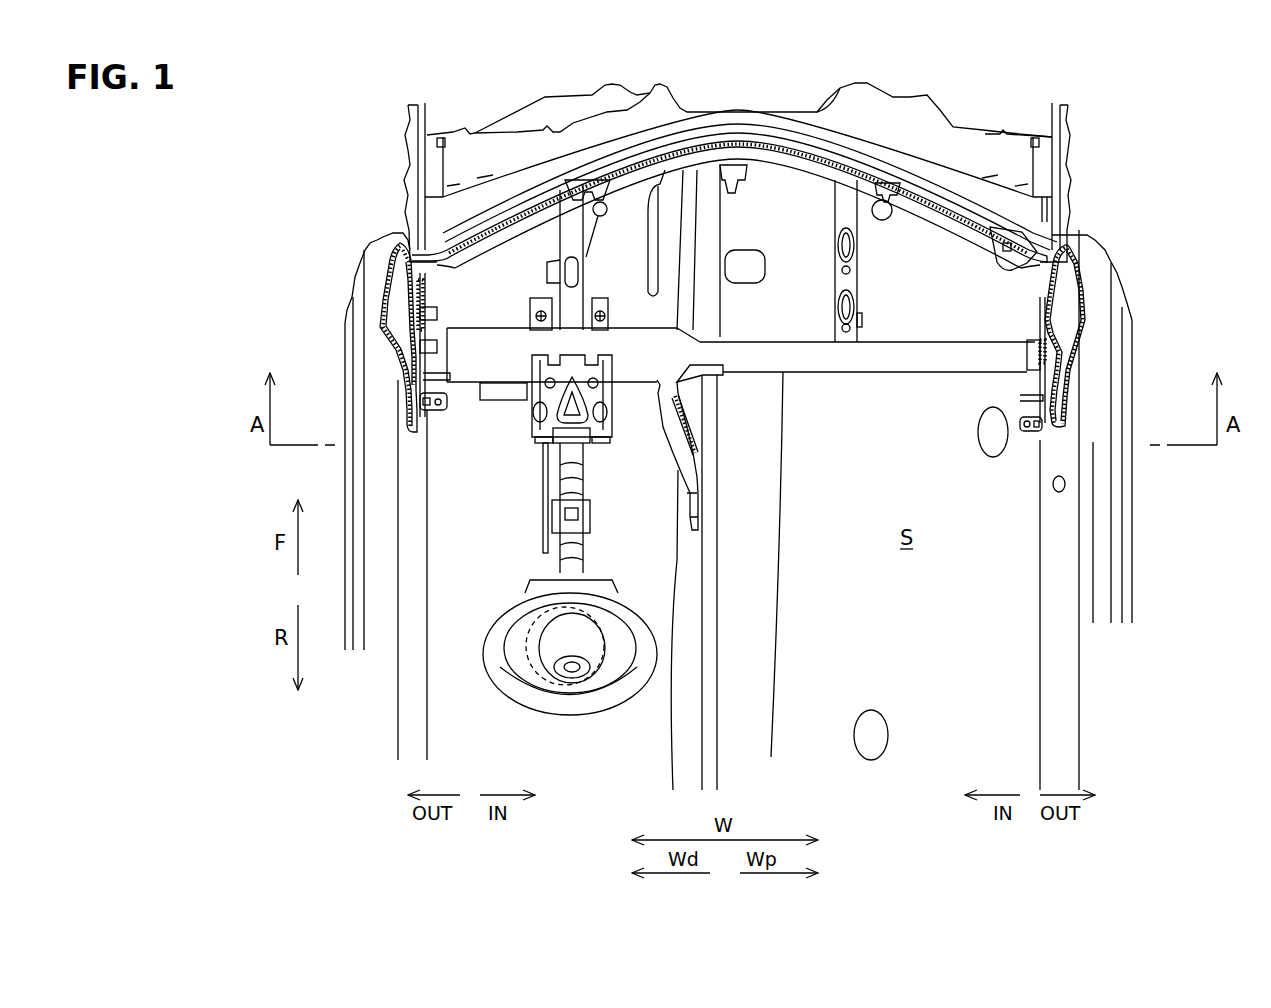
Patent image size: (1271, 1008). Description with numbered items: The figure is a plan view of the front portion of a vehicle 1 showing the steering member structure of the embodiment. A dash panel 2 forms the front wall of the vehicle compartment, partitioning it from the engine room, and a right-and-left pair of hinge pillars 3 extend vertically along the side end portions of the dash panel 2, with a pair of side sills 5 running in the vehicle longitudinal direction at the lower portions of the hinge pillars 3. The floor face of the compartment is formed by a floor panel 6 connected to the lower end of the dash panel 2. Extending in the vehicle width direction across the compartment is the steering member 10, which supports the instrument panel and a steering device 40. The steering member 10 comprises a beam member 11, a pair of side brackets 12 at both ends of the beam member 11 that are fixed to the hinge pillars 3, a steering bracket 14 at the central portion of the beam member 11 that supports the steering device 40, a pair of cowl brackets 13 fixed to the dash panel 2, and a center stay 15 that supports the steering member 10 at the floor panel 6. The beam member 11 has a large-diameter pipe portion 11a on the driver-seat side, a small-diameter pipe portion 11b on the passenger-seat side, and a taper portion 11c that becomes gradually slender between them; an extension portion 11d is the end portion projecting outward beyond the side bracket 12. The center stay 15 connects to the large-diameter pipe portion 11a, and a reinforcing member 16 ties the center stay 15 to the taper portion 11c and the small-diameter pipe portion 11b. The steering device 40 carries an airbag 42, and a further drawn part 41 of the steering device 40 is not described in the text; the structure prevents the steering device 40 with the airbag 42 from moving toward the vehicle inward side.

The vehicle 1 is at (360, 104).
The dash panel 2 is at (490, 224).
The hinge pillar 3 is at (385, 237).
The side sill 5 is at (372, 479).
The floor panel 6 is at (677, 733).
The steering member 10 is at (942, 288).
The beam member 11 is at (830, 374).
The large-diameter pipe portion 11a is at (636, 323).
The small-diameter pipe portion 11b is at (887, 343).
The taper portion 11c is at (678, 337).
The extension portion 11d is at (1047, 341).
The side bracket 12 is at (440, 403).
The cowl bracket 13 is at (563, 227).
The steering bracket 14 is at (613, 412).
The center stay 15 is at (673, 450).
The reinforcing member 16 is at (708, 377).
The steering device 40 is at (522, 543).
The steering wheel 41 is at (573, 707).
The airbag 42 is at (533, 650).